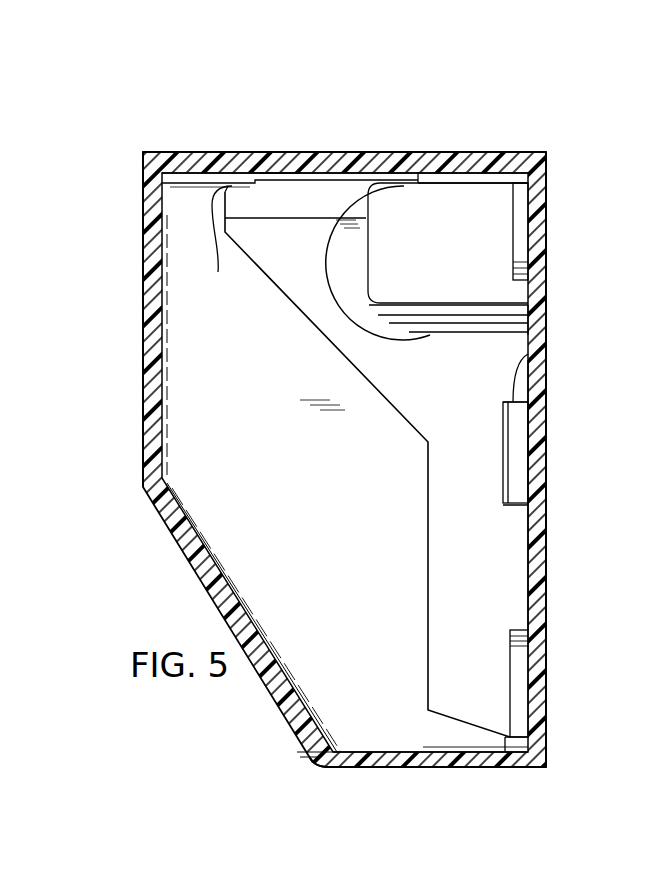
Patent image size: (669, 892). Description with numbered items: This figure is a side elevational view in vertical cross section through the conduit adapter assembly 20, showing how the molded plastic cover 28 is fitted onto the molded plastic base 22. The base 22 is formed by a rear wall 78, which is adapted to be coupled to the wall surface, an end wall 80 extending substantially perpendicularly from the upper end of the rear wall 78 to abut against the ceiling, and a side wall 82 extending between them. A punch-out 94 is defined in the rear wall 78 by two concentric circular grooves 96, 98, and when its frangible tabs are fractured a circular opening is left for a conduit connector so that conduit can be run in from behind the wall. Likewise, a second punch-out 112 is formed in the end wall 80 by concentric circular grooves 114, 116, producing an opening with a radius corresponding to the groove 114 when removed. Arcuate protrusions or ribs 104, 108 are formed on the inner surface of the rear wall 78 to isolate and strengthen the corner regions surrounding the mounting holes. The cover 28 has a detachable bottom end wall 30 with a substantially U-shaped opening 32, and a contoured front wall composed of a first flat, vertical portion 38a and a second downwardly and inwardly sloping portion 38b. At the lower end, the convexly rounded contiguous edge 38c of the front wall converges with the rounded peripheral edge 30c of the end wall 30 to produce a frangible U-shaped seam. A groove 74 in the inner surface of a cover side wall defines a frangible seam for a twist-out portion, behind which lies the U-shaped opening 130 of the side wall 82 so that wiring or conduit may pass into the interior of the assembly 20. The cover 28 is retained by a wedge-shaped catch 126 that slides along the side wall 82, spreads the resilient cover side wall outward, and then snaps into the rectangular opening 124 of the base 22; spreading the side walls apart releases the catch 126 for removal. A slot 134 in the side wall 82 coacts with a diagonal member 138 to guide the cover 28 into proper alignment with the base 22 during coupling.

The conduit adapter assembly 20 is at (481, 132).
The base 22 is at (547, 264).
The cover 28 is at (144, 197).
The detachable end wall 30 is at (352, 768).
The rounded contiguous peripheral edge 30c is at (315, 761).
The U-shaped opening 32 is at (388, 768).
The first flat, vertical portion 38a is at (143, 315).
The second downwardly and inwardly sloping portion 38b is at (205, 595).
The contiguous edge of front wall 38c is at (311, 757).
The groove 74 is at (460, 303).
The rear wall 78 is at (546, 700).
The end wall 80 is at (173, 152).
The side wall 82 is at (455, 540).
The punch-out 94 is at (546, 483).
The circular groove 96 is at (546, 556).
The circular groove 98 is at (539, 310).
The arcuate protrusion or rib 104 is at (505, 700).
The arcuate protrusion or rib 108 is at (513, 245).
The second punch-out 112 is at (327, 152).
The circular groove 114 is at (226, 152).
The circular groove 116 is at (468, 152).
The rectangular opening 124 is at (531, 355).
The catch 126 is at (513, 478).
The U-shaped opening 130 is at (388, 194).
The slot 134 is at (218, 241).
The diagonal member 138 is at (190, 187).